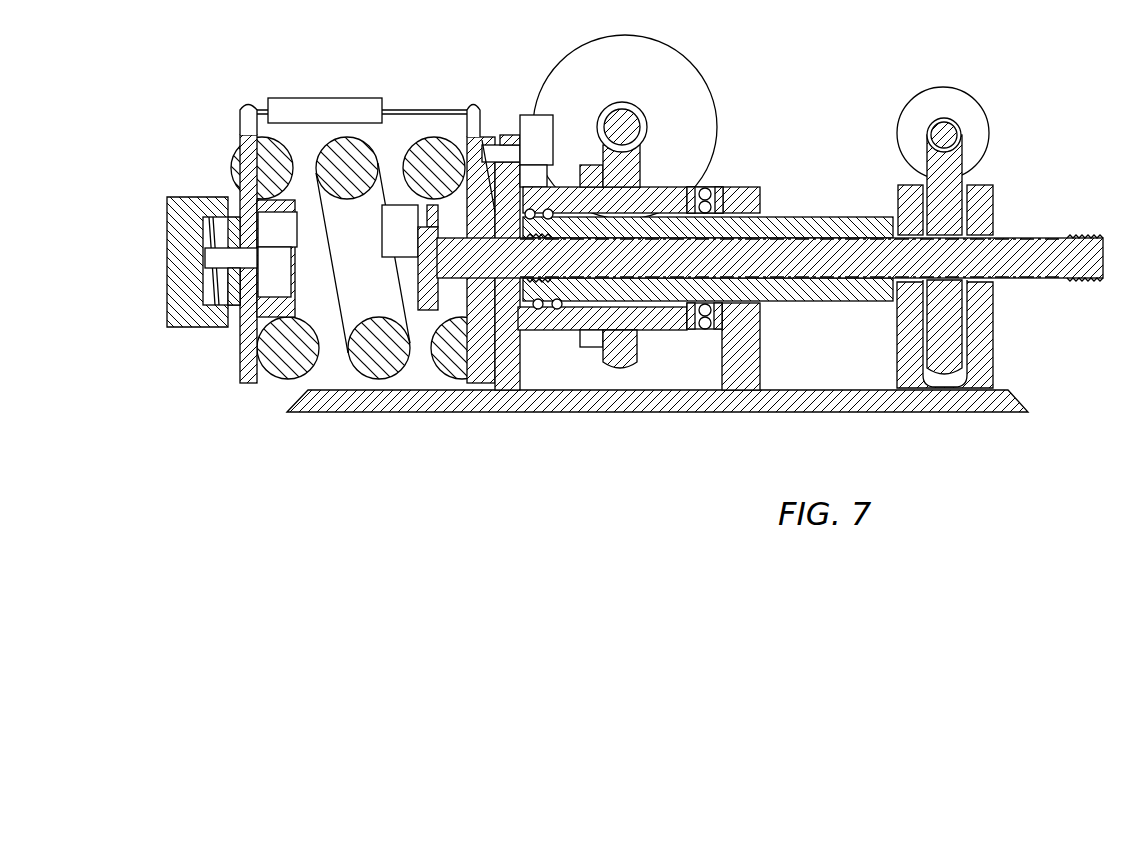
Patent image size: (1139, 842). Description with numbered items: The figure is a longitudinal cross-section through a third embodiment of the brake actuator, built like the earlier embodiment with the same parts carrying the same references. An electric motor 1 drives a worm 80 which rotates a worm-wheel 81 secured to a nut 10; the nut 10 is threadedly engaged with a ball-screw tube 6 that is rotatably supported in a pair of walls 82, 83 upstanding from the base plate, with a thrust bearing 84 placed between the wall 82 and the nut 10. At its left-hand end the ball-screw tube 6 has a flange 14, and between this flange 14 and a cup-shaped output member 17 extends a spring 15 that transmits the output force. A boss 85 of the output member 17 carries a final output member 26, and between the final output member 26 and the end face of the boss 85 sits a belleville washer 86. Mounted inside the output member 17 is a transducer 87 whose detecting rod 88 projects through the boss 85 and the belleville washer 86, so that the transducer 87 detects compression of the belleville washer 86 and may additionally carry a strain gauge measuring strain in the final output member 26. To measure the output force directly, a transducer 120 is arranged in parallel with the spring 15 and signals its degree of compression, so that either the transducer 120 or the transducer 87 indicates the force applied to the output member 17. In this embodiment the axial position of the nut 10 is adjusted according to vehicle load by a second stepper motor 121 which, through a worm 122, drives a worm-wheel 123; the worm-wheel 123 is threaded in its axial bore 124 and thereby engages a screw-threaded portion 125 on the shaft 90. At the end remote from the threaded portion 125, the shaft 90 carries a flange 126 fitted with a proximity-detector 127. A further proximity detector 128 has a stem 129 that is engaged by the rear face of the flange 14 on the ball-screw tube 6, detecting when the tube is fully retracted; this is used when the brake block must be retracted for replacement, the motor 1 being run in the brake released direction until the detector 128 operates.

The electric motor 1 is at (612, 74).
The ball-screw tube 6 is at (600, 296).
The nut 10 is at (667, 336).
The flange 14 is at (482, 130).
The spring 15 is at (360, 155).
The cup-shaped output member 17 is at (243, 358).
The final output member 26 is at (187, 249).
The worm 80 is at (640, 112).
The worm-wheel 81 is at (627, 166).
The wall 82 is at (760, 328).
The wall 83 is at (508, 362).
The thrust bearing 84 is at (722, 187).
The boss 85 is at (233, 298).
The belleville washer 86 is at (208, 223).
The transducer 87 is at (273, 252).
The detecting rod 88 is at (245, 259).
The shaft 90 is at (790, 262).
The transducer 120 is at (321, 113).
The second stepper motor 121 is at (938, 100).
The worm 122 is at (961, 132).
The worm-wheel 123 is at (937, 218).
The axial bore 124 is at (903, 308).
The screw-threaded portion 125 is at (1008, 282).
The flange 126 is at (423, 304).
The proximity-detector 127 is at (398, 233).
The proximity detector 128 is at (553, 122).
The stem 129 is at (507, 153).